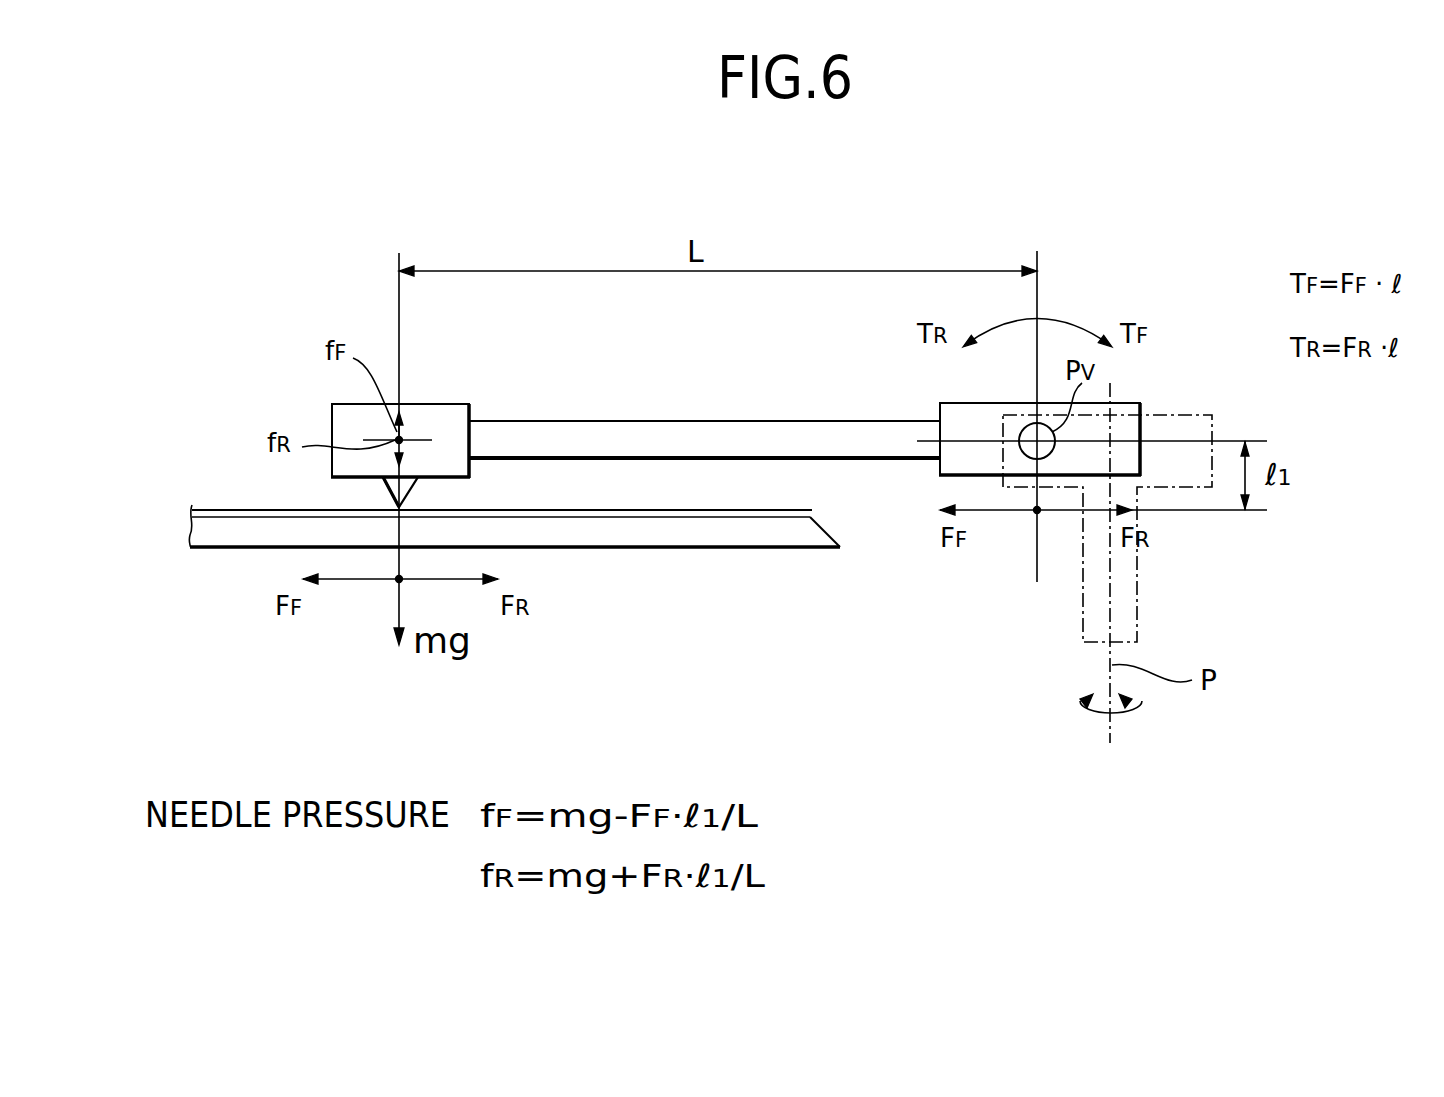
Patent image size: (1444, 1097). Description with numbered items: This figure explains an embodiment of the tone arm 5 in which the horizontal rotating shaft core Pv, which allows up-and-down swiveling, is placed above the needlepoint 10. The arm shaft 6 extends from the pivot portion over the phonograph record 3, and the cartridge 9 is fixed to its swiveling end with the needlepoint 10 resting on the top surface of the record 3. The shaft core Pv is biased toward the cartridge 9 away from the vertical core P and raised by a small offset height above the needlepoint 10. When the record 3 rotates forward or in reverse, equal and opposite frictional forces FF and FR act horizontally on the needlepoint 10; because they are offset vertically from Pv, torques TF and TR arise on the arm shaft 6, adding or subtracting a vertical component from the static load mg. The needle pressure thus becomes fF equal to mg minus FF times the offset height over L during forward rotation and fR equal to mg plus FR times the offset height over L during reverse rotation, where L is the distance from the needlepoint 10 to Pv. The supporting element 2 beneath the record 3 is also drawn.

The disc 2 is at (800, 548).
The phonograph record 3 is at (704, 509).
The tone arm 5 is at (704, 381).
The arm shaft 6 is at (683, 420).
The cartridge 9 is at (442, 403).
The needlepoint 10 is at (393, 498).